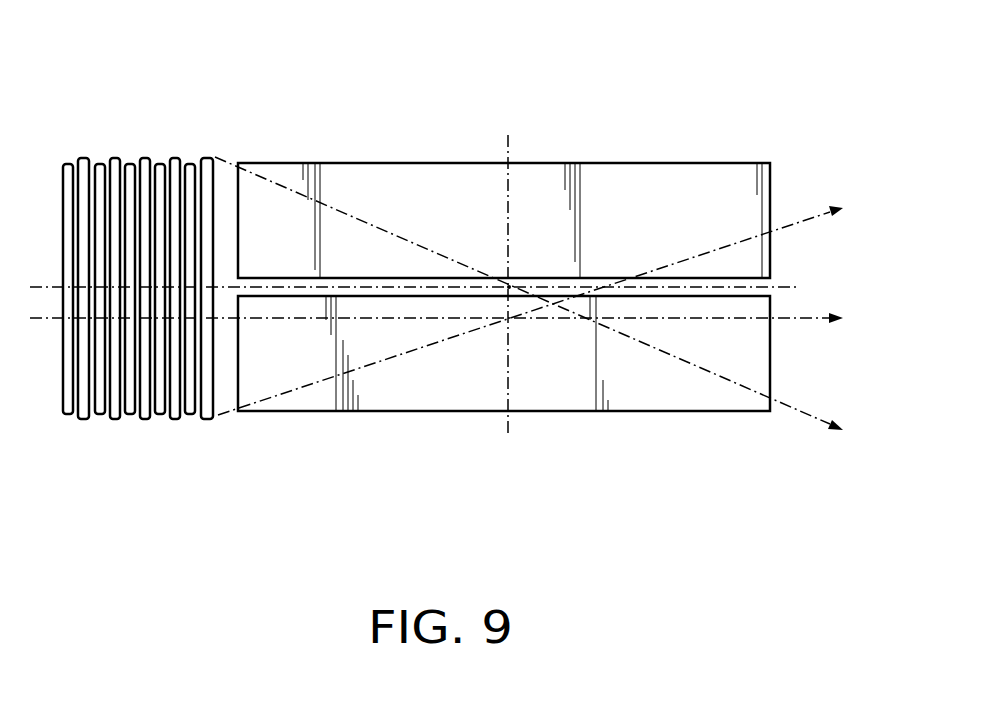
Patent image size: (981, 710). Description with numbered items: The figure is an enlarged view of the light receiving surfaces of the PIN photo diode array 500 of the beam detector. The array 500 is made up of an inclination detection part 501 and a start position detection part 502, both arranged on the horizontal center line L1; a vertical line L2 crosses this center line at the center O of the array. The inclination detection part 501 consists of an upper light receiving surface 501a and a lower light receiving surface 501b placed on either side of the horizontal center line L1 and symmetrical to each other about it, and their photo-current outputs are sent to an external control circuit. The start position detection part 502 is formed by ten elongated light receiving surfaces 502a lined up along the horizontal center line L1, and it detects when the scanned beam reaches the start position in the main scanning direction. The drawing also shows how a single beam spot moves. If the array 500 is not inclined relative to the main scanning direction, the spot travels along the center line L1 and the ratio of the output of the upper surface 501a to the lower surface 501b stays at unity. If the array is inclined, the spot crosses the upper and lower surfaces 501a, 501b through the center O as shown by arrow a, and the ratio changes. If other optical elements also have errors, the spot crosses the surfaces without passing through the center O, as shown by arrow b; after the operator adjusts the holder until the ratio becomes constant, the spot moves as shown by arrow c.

The PIN photo diode array 500 is at (538, 75).
The inclination detection part 501 is at (776, 126).
The upper light receiving surface 501a is at (770, 203).
The lower light receiving surface 501b is at (770, 350).
The start position detection part 502 is at (222, 127).
The elongated light receiving surface 502a is at (66, 417).
The horizontal center line L1 is at (797, 284).
The axis L2 is at (510, 185).
The center O is at (510, 285).
The arrow a is at (543, 301).
The arrow b is at (543, 303).
The arrow c is at (449, 317).